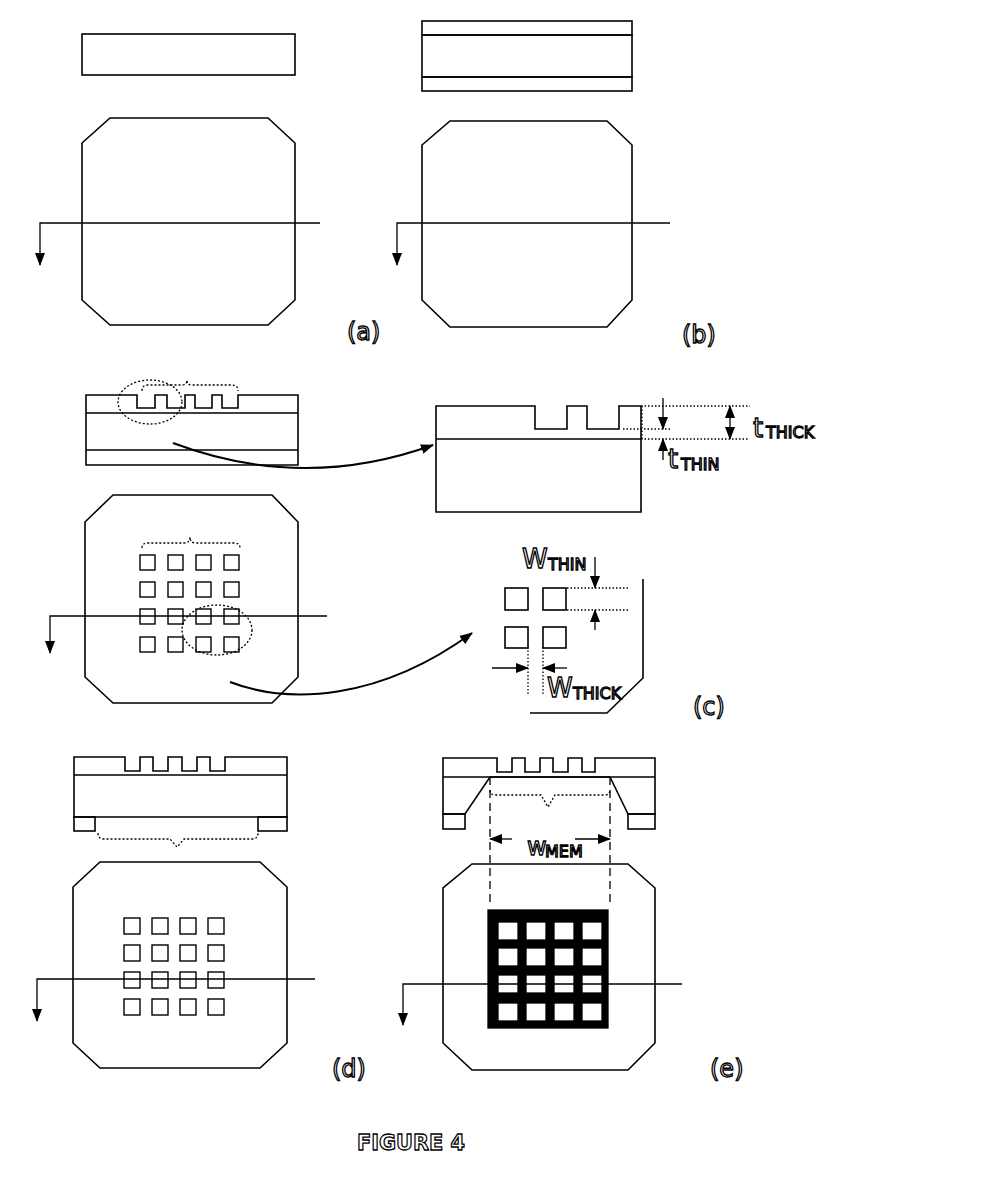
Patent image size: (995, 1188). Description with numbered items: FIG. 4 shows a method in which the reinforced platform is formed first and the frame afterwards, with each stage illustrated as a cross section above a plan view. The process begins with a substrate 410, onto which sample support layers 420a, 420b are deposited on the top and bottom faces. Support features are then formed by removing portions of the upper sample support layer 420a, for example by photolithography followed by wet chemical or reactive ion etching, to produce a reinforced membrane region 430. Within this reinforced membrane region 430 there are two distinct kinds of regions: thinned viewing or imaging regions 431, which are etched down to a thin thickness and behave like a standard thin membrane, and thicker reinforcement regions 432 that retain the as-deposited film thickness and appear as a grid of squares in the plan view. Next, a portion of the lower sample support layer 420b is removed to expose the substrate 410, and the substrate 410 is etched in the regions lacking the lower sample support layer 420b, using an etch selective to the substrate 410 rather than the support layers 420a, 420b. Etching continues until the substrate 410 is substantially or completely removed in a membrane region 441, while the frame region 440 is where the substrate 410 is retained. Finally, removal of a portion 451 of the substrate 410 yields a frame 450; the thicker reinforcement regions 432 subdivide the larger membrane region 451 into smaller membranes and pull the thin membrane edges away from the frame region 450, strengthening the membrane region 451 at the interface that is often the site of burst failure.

The substrate 410 is at (283, 63).
The sample support layer 420a is at (632, 27).
The sample support layer 420b is at (632, 82).
The reinforced membrane region 430 is at (187, 380).
The thinned viewing or imaging region 431 is at (238, 562).
The thicker reinforcement region 432 is at (238, 575).
The frame region 440 is at (88, 805).
The membrane region 441 is at (183, 848).
The frame region 450 is at (463, 783).
The membrane region 451 is at (548, 807).